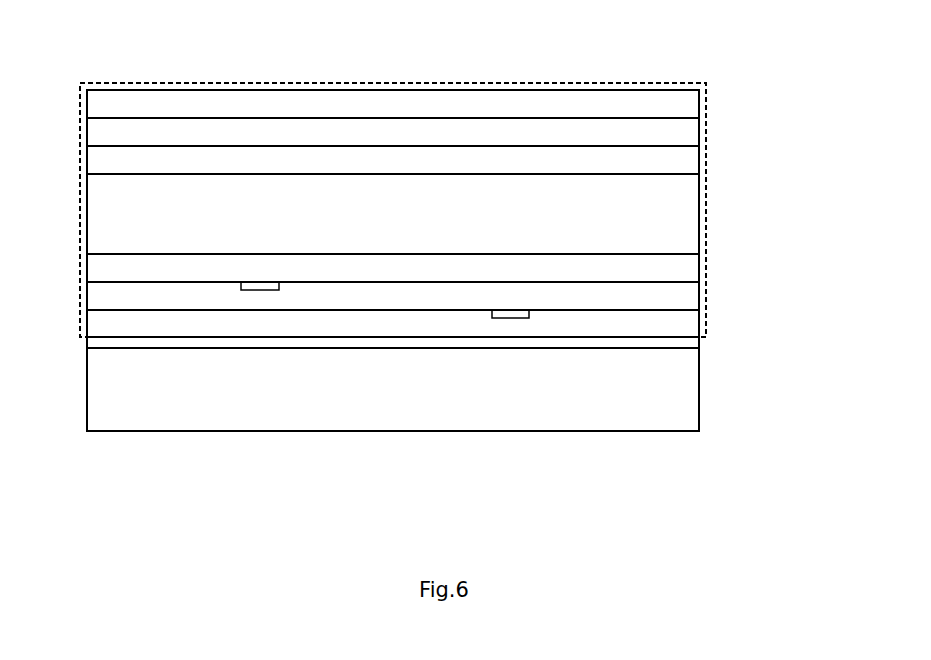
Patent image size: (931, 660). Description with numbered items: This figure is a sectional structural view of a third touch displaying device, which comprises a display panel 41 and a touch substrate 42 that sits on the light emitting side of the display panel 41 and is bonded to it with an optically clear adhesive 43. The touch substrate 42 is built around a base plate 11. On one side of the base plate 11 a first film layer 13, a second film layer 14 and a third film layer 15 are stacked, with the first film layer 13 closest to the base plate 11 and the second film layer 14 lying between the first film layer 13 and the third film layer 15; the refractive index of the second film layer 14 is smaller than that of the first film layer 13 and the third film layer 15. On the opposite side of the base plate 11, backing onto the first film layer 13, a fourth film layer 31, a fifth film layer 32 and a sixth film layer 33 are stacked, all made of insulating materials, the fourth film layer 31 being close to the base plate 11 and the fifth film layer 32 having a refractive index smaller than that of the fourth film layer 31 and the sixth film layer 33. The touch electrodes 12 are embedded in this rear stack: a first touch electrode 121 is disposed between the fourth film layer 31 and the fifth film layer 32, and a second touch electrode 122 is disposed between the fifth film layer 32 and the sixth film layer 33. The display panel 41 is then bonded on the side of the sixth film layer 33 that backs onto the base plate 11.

The touch substrate 42 is at (609, 83).
The third film layer 15 is at (642, 103).
The second film layer 14 is at (642, 129).
The first film layer 13 is at (647, 156).
The base plate 11 is at (650, 212).
The fourth film layer 31 is at (642, 267).
The fifth film layer 32 is at (642, 295).
The sixth film layer 33 is at (647, 322).
The optically clear adhesive 43 is at (650, 343).
The display panel 41 is at (650, 396).
The touch electrodes 12 is at (385, 421).
The first touch electrode 121 is at (261, 285).
The second touch electrode 122 is at (510, 405).